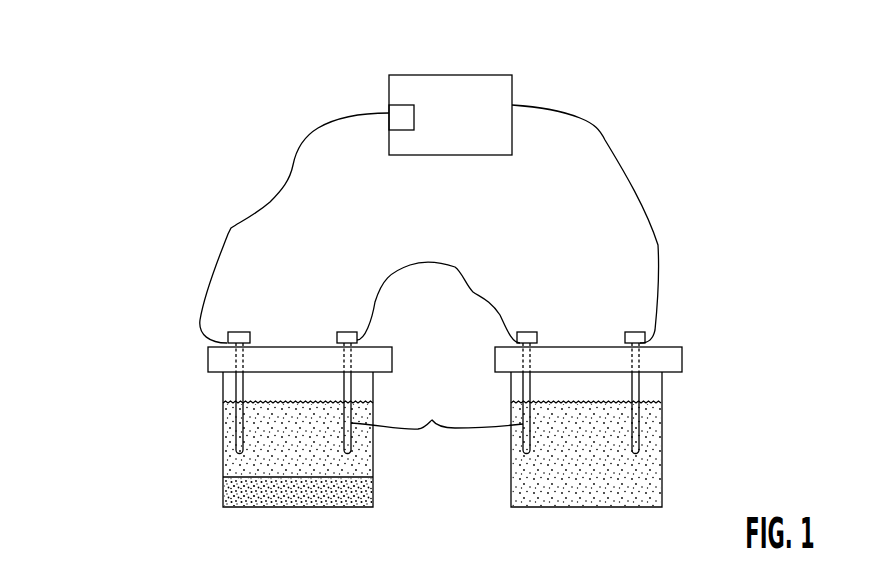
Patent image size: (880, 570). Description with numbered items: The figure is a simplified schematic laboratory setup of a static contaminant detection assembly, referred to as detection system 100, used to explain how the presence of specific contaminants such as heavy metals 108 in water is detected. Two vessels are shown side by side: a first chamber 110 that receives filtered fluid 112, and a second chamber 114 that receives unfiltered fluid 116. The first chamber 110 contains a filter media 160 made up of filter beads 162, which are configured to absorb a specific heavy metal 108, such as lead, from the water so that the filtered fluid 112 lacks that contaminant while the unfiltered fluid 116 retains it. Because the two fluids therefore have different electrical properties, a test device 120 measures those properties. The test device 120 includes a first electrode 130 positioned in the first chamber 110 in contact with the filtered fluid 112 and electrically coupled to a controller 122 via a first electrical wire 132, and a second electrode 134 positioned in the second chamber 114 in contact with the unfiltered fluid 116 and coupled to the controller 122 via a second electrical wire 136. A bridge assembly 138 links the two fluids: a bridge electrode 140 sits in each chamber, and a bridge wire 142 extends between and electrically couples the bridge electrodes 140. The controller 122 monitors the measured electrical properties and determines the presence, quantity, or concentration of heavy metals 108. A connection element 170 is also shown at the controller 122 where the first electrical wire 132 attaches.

The detection system 100 is at (147, 59).
The heavy metals 108 is at (312, 495).
The first chamber 110 is at (230, 467).
The filtered fluid 112 is at (277, 452).
The second chamber 114 is at (620, 509).
The unfiltered fluid 116 is at (571, 453).
The test device 120 is at (660, 222).
The controller 122 is at (480, 127).
The first electrode 130 is at (233, 428).
The first electrical wire 132 is at (262, 212).
The second electrode 134 is at (636, 418).
The second electrical wire 136 is at (627, 180).
The bridge assembly 138 is at (438, 264).
The bridge electrode 140 is at (437, 407).
The bridge wire 142 is at (403, 270).
The filter media 160 is at (236, 493).
The filter beads 162 is at (292, 492).
The connector 170 is at (400, 111).